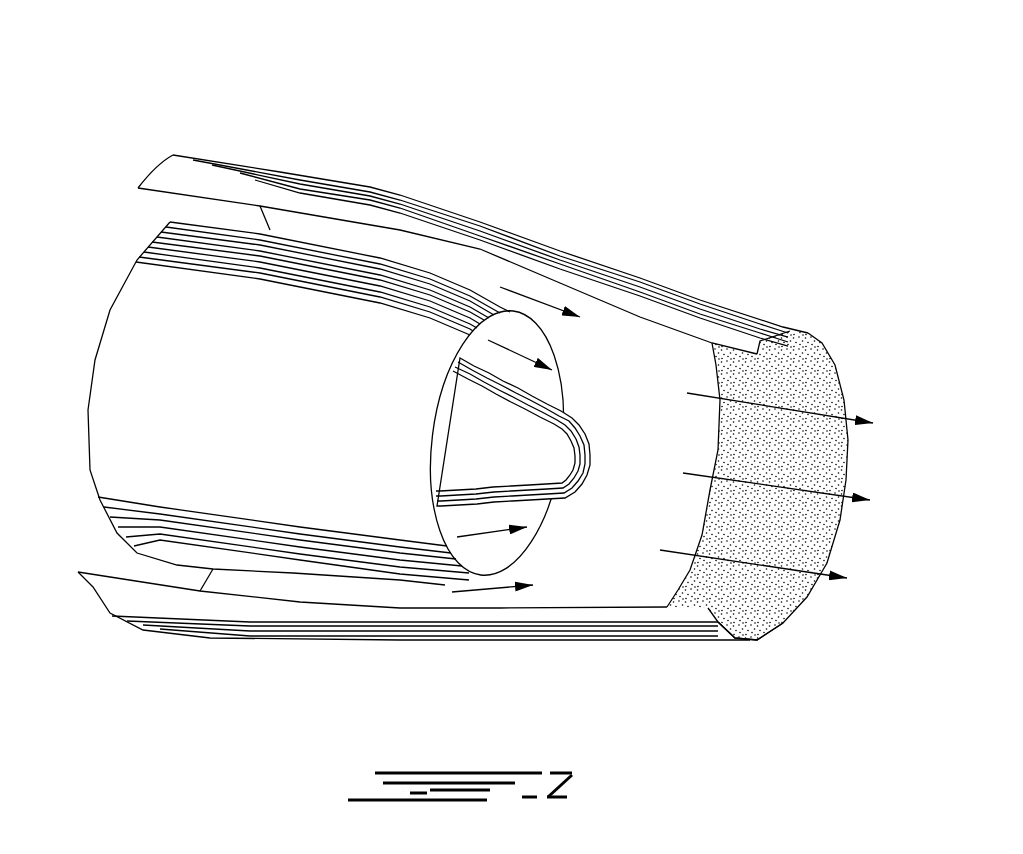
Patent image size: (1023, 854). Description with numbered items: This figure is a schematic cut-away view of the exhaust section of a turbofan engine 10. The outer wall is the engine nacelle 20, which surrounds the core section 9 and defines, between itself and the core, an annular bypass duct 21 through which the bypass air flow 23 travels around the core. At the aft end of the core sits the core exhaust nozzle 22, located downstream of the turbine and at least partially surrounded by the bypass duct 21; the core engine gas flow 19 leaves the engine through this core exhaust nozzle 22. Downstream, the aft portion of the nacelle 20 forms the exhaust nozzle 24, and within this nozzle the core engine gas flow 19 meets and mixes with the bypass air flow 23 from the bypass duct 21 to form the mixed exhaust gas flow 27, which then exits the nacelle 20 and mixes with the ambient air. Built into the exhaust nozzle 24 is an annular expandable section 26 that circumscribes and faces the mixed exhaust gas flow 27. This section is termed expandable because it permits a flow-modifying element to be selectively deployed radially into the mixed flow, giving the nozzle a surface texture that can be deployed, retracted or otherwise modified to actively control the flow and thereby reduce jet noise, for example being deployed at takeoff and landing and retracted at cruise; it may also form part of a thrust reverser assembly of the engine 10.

The turbofan engine 10 is at (556, 146).
The core section 9 is at (313, 280).
The engine nacelle 20 is at (437, 225).
The bypass duct 21 is at (453, 266).
The core exhaust nozzle 22 is at (537, 347).
The exhaust nozzle 24 is at (733, 331).
The annular expandable section 26 is at (791, 450).
The mixed exhaust gas flow 27 is at (790, 568).
The core engine gas flow 19 is at (479, 533).
The bypass air flow 23 is at (478, 590).